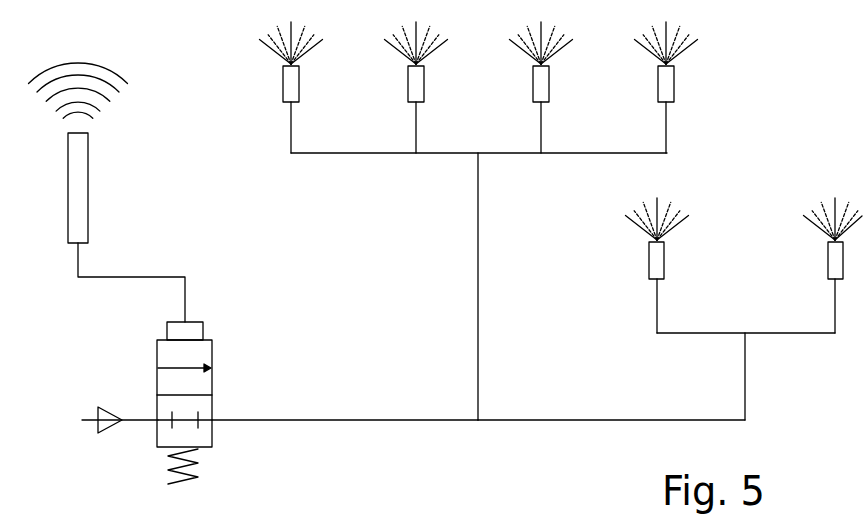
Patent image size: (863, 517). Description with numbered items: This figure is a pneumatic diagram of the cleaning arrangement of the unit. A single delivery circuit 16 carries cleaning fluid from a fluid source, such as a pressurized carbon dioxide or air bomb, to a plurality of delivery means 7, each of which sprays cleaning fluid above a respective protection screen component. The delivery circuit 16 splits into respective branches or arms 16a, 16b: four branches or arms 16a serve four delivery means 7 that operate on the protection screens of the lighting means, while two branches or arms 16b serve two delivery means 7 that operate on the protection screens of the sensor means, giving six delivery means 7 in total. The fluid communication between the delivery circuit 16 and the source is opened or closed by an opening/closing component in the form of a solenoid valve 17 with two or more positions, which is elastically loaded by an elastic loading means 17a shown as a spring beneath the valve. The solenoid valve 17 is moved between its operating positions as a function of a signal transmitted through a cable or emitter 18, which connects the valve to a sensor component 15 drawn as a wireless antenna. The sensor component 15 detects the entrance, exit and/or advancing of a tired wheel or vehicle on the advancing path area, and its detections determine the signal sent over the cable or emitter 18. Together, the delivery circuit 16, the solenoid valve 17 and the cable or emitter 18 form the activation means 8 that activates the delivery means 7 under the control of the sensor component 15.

The delivery means 7 is at (410, 82).
The activation means 8 is at (525, 422).
The sensor component 15 is at (88, 193).
The delivery circuit 16 is at (418, 422).
The branches or arms 16a is at (302, 155).
The branches or arms 16b is at (665, 334).
The solenoid valve 17 is at (212, 350).
The elastic loading means 17a is at (200, 472).
The cable or emitter 18 is at (187, 285).